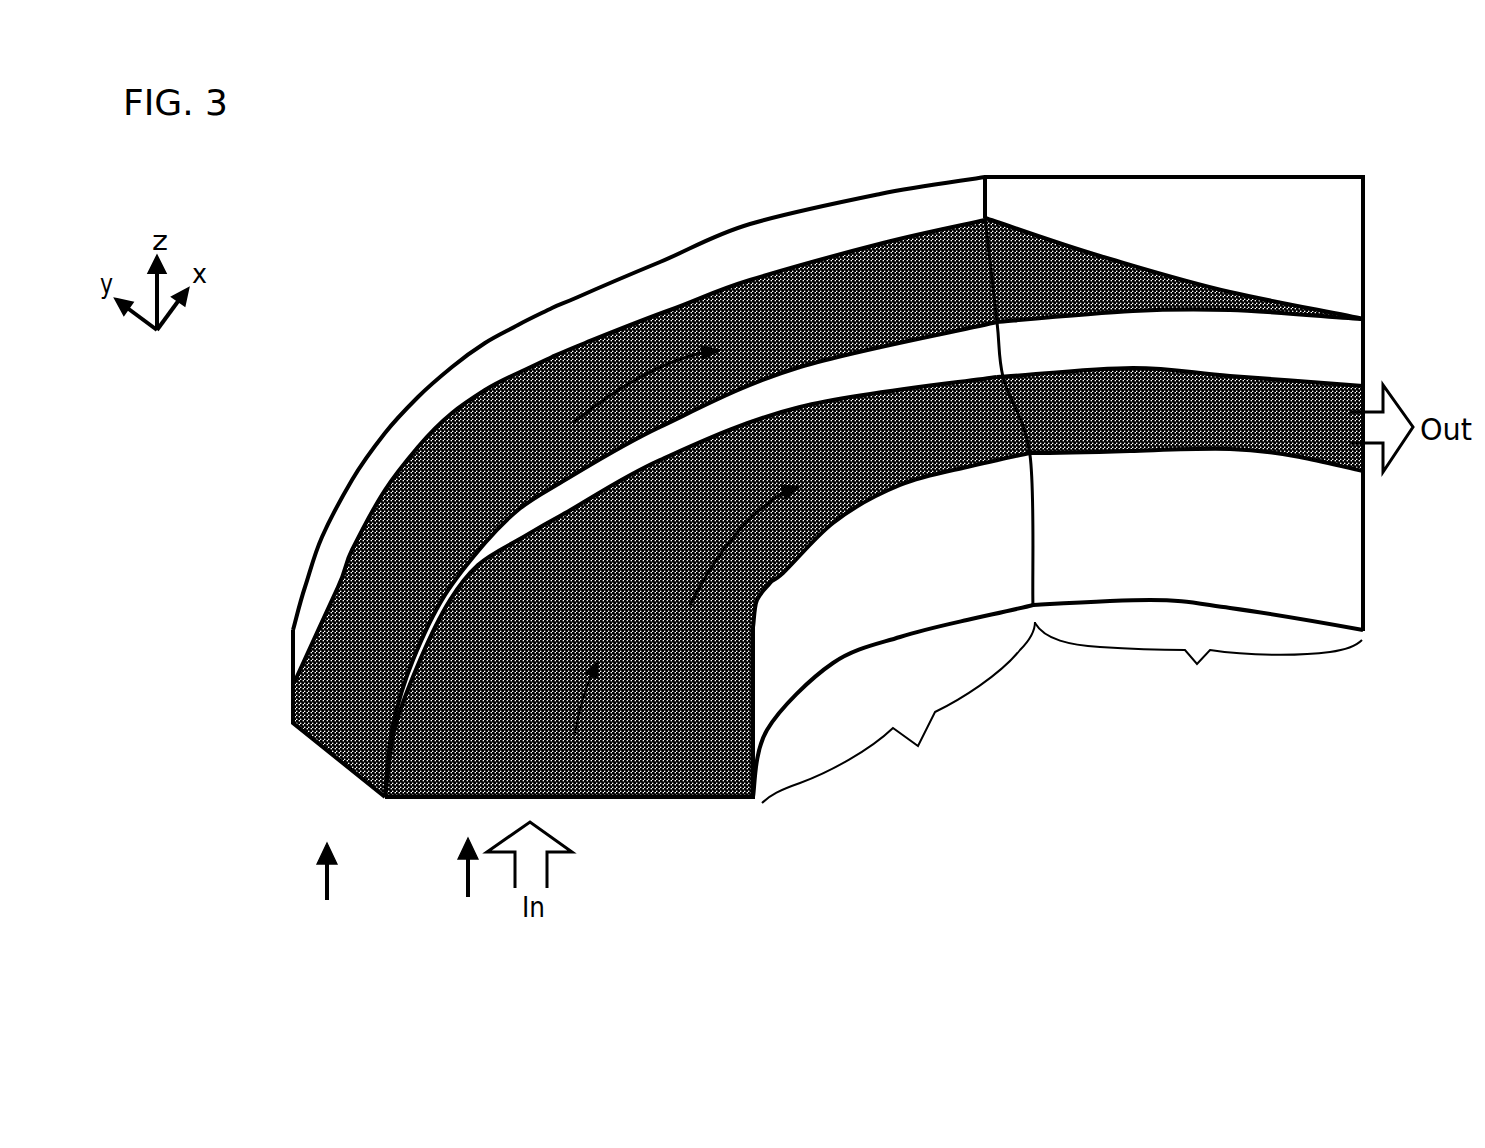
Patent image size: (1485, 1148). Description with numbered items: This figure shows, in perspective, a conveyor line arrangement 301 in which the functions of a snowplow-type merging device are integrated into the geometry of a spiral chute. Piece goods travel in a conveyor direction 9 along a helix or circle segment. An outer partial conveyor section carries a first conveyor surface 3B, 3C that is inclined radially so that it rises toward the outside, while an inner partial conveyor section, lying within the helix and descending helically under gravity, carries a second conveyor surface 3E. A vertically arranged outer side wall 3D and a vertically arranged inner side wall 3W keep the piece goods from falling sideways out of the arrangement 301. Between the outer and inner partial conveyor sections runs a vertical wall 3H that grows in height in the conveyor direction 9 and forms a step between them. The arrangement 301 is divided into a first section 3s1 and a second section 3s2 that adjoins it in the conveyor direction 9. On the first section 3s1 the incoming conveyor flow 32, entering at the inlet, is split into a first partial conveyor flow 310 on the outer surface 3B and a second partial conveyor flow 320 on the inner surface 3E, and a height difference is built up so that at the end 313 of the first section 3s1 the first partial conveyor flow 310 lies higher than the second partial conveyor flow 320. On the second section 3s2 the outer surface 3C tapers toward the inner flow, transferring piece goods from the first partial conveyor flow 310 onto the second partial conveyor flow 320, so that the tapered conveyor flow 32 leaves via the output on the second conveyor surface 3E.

The conveyor line arrangement 301 is at (613, 135).
The outer side wall 3D is at (533, 340).
The first conveyor surface 3B is at (467, 517).
The first conveyor surface 3C is at (1038, 280).
The end of the first section 313 is at (990, 289).
The vertical wall 3H is at (1246, 352).
The second conveyor surface 3E is at (1263, 441).
The inner side wall 3W is at (965, 555).
The first partial conveyor flow 310 is at (693, 357).
The second partial conveyor flow 320 is at (715, 558).
The conveyor direction 9 is at (580, 690).
The first section 3s1 is at (898, 712).
The second section 3s2 is at (1198, 665).
The conveyor flow 32 is at (326, 880).